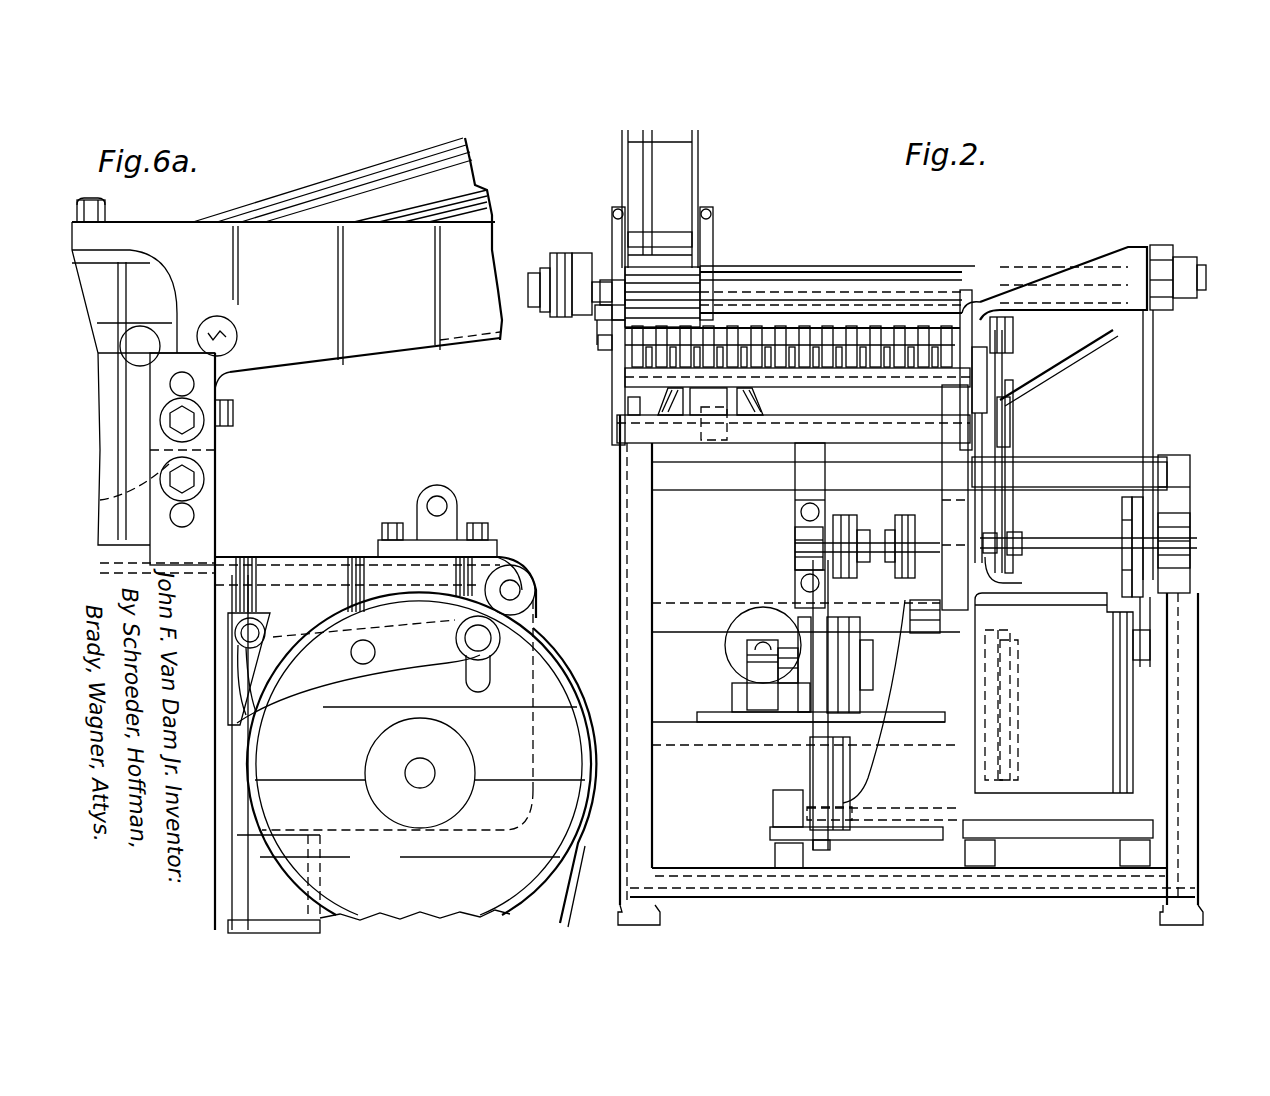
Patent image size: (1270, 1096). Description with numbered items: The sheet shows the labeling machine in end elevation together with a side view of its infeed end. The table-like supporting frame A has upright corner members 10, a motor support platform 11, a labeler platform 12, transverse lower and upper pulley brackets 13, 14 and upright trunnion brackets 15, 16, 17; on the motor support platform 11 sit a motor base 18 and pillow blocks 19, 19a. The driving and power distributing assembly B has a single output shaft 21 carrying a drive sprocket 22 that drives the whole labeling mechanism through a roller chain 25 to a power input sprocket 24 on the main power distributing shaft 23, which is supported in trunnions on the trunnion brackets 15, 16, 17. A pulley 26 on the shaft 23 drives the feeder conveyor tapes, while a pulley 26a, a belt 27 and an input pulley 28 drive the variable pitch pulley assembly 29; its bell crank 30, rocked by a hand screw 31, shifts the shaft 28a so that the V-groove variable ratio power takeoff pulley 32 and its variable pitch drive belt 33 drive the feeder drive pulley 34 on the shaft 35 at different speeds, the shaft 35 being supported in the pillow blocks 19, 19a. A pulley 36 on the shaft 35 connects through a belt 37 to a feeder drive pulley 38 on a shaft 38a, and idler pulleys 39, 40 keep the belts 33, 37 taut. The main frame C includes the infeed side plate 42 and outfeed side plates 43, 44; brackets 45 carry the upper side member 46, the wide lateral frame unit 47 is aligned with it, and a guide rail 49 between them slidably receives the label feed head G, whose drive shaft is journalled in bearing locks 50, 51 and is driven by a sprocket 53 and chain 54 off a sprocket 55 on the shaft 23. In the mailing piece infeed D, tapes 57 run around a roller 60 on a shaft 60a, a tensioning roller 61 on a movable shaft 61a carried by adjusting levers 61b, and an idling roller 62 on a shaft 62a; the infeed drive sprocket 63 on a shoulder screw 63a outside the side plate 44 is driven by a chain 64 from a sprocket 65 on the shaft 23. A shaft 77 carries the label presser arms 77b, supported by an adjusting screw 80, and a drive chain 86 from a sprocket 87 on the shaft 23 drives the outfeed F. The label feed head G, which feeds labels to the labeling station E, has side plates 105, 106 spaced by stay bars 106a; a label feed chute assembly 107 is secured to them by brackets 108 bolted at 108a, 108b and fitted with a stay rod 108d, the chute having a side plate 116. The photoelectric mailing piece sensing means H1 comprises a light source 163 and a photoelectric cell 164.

In FIG. 2, the upright corner members 10 is at (619, 520).
In FIG. 2, the motor support platform 11 is at (683, 870).
In FIG. 2, the labeler platform 12 is at (1100, 468).
In FIG. 2, the transverse lower pulley bracket 13 is at (678, 740).
In FIG. 2, the transverse upper pulley bracket 14 is at (681, 603).
In FIG. 2, the upright trunnion bracket 15 is at (797, 496).
In FIG. 2, the upright trunnion bracket 16 is at (947, 468).
In FIG. 2, the upright trunnion bracket 17 is at (1193, 505).
In FIG. 2, the motor base 18 is at (1127, 823).
In FIG. 2, the pillow block 19 is at (773, 800).
In FIG. 2, the pillow block 19a is at (1000, 857).
In FIG. 2, the output shaft 21 is at (1160, 643).
In FIG. 2, the drive sprocket 22 is at (1145, 663).
In FIG. 2, the main power distributing shaft 23 is at (1086, 536).
In FIG. 2, the power input sprocket 24 is at (1125, 575).
In FIG. 2, the roller chain 25 is at (1145, 603).
In FIG. 2, the pulley 26 is at (920, 562).
In FIG. 2, the pulley 26a is at (857, 526).
In FIG. 2, the belt 27 is at (838, 597).
In FIG. 2, the input pulley 28 is at (865, 670).
In FIG. 2, the shaft 28a is at (784, 643).
In FIG. 2, the variable pitch pulley assembly 29 is at (720, 648).
In FIG. 2, the bell crank 30 is at (760, 692).
In FIG. 2, the hand screw 31 is at (762, 648).
In FIG. 2, the V-groove variable ratio power takeoff pulley 32 is at (815, 665).
In FIG. 2, the variable pitch drive belt 33 is at (820, 724).
In FIG. 2, the feeder drive pulley 34 is at (813, 791).
In FIG. 2, the shaft 35 is at (897, 808).
In FIG. 2, the pulley 36 is at (1018, 780).
In FIG. 6A, the belt 37 is at (565, 904).
In FIG. 2, the belt 37 is at (1010, 453).
In FIG. 6A, the feeder drive pulley 38 is at (553, 690).
In FIG. 2, the feeder drive pulley 38 is at (1012, 412).
In FIG. 6A, the shaft 38a is at (435, 769).
In FIG. 2, the idler pulley 39 is at (810, 759).
In FIG. 2, the idler pulley 40 is at (1040, 642).
In FIG. 6A, the infeed side plate 42 is at (254, 556).
In FIG. 2, the outfeed side plate 43 is at (612, 408).
In FIG. 2, the outfeed side plate 44 is at (965, 384).
In FIG. 2, the brackets 45 is at (583, 252).
In FIG. 2, the upper side member 46 is at (562, 252).
In FIG. 2, the lateral frame unit 47 is at (1110, 247).
In FIG. 2, the guide rail 49 is at (880, 270).
In FIG. 2, the bearing lock 50 is at (536, 270).
In FIG. 2, the bearing lock 51 is at (1187, 255).
In FIG. 2, the sprocket 53 is at (1151, 247).
In FIG. 2, the chain 54 is at (1155, 340).
In FIG. 2, the sprocket 55 is at (1194, 563).
In FIG. 6A, the tapes 57 is at (536, 575).
In FIG. 6A, the roller 60 is at (457, 527).
In FIG. 6A, the shaft 60a is at (490, 545).
In FIG. 6A, the tensioning roller 61 is at (546, 636).
In FIG. 6A, the movable shaft 61a is at (467, 650).
In FIG. 6A, the adjusting levers 61b is at (288, 632).
In FIG. 6A, the idling roller 62 is at (530, 584).
In FIG. 6A, the shaft 62a is at (515, 592).
In FIG. 2, the sprocket 63 is at (1013, 313).
In FIG. 2, the shoulder screw 63a is at (1015, 345).
In FIG. 2, the chain 64 is at (1016, 488).
In FIG. 2, the sprocket 65 is at (1020, 570).
In FIG. 2, the shaft 77 is at (788, 300).
In FIG. 2, the label presser arms 77b is at (593, 313).
In FIG. 2, the screw 80 is at (603, 351).
In FIG. 2, the drive chain 86 is at (983, 521).
In FIG. 2, the sprocket 87 is at (997, 580).
In FIG. 2, the side plate 105 is at (614, 207).
In FIG. 2, the side plate 106 is at (713, 212).
In FIG. 6A, the stay bar 106a is at (140, 342).
In FIG. 6A, the label feed chute assembly 107 is at (313, 180).
In FIG. 6A, the label feed chute brackets 108 is at (397, 332).
In FIG. 6A, the bolt 108a is at (220, 428).
In FIG. 6A, the bolt 108b is at (106, 212).
In FIG. 6A, the stay rod 108d is at (227, 331).
In FIG. 6A, the side plate 116 is at (470, 150).
In FIG. 2, the light source 163 is at (748, 415).
In FIG. 2, the photoelectric cell 164 is at (660, 400).
In FIG. 2, the table-like supporting frame A is at (615, 477).
In FIG. 2, the driving and power distributing assembly B is at (725, 677).
In FIG. 2, the main frame C is at (590, 346).
In FIG. 6A, the mailing piece infeed D is at (330, 553).
In FIG. 2, the labeling station E is at (712, 265).
In FIG. 2, the outfeed F is at (895, 322).
In FIG. 6A, the label feed head G is at (305, 372).
In FIG. 2, the label feed head G is at (720, 212).
In FIG. 2, the photoelectric mailing piece sensing means H1 is at (775, 402).